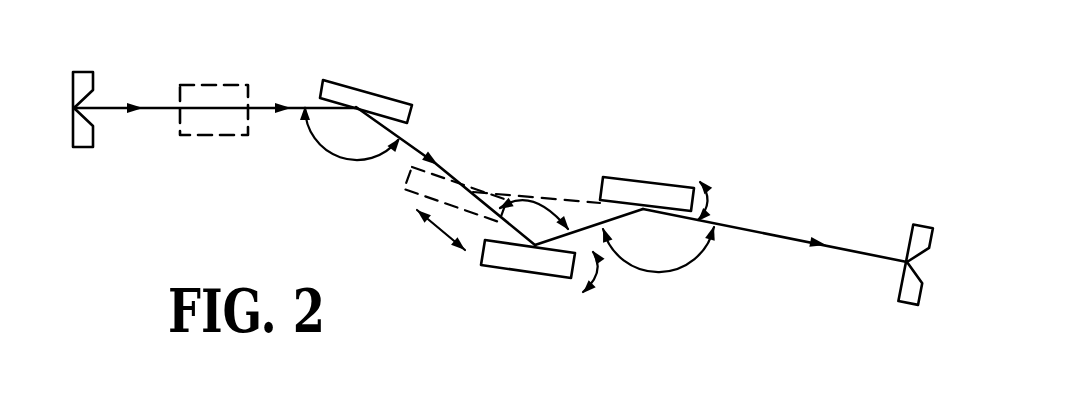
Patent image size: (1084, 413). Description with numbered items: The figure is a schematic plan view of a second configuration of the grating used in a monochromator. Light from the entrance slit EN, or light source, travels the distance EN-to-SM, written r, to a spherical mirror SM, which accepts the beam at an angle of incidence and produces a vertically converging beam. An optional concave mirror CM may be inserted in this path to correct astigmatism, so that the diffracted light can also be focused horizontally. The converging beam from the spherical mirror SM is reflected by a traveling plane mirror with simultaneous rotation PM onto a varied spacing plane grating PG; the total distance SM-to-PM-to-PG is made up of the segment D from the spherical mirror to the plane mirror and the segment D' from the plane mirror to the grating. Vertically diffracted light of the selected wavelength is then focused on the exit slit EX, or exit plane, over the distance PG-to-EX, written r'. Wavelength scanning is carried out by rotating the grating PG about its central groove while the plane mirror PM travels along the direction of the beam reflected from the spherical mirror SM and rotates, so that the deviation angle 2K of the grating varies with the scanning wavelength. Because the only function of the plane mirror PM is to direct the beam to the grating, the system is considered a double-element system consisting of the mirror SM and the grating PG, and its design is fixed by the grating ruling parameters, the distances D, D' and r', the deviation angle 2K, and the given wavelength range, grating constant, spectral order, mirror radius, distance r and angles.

The entrance slit EN is at (103, 78).
The distance EN-to-SM r is at (214, 84).
The optional concave mirror CM is at (216, 81).
The spherical mirror SM is at (373, 83).
The distance SM-to-PM D is at (455, 178).
The distance PM-to-PG D' is at (536, 178).
The plane mirror PM is at (535, 274).
The varied spacing plane grating PG is at (656, 166).
The deviation angle of the grating 2K is at (658, 268).
The distance PG-to-EX r' is at (775, 226).
The exit slit EX is at (913, 234).